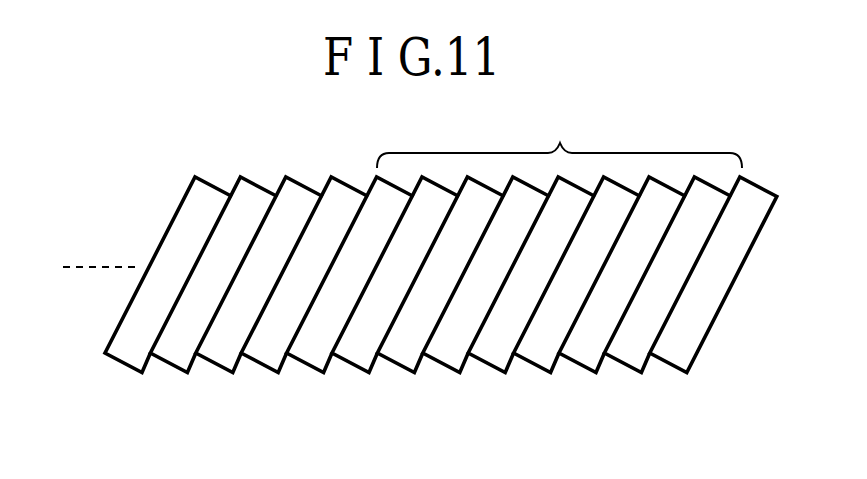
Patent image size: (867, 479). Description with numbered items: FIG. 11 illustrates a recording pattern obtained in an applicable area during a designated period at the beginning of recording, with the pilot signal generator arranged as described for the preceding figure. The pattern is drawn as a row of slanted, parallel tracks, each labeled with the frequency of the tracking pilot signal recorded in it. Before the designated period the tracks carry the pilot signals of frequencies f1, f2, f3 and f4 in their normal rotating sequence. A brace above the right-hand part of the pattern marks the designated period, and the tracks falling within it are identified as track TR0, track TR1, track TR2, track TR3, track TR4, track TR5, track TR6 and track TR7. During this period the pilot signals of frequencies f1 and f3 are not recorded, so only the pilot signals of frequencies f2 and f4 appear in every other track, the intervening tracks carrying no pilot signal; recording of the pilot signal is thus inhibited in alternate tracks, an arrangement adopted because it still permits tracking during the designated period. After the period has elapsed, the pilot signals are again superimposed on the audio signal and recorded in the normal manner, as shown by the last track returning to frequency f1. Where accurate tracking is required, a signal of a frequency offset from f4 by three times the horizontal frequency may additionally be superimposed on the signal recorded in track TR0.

The pilot signal frequency f1 is at (441, 306).
The pilot signal frequency f2 is at (395, 310).
The pilot signal frequency f3 is at (259, 275).
The pilot signal frequency f4 is at (486, 310).
The track TR0 is at (317, 352).
The track TR1 is at (405, 352).
The track TR2 is at (452, 352).
The track TR3 is at (497, 352).
The track TR4 is at (542, 352).
The track TR5 is at (587, 352).
The track TR6 is at (634, 352).
The track TR7 is at (682, 352).